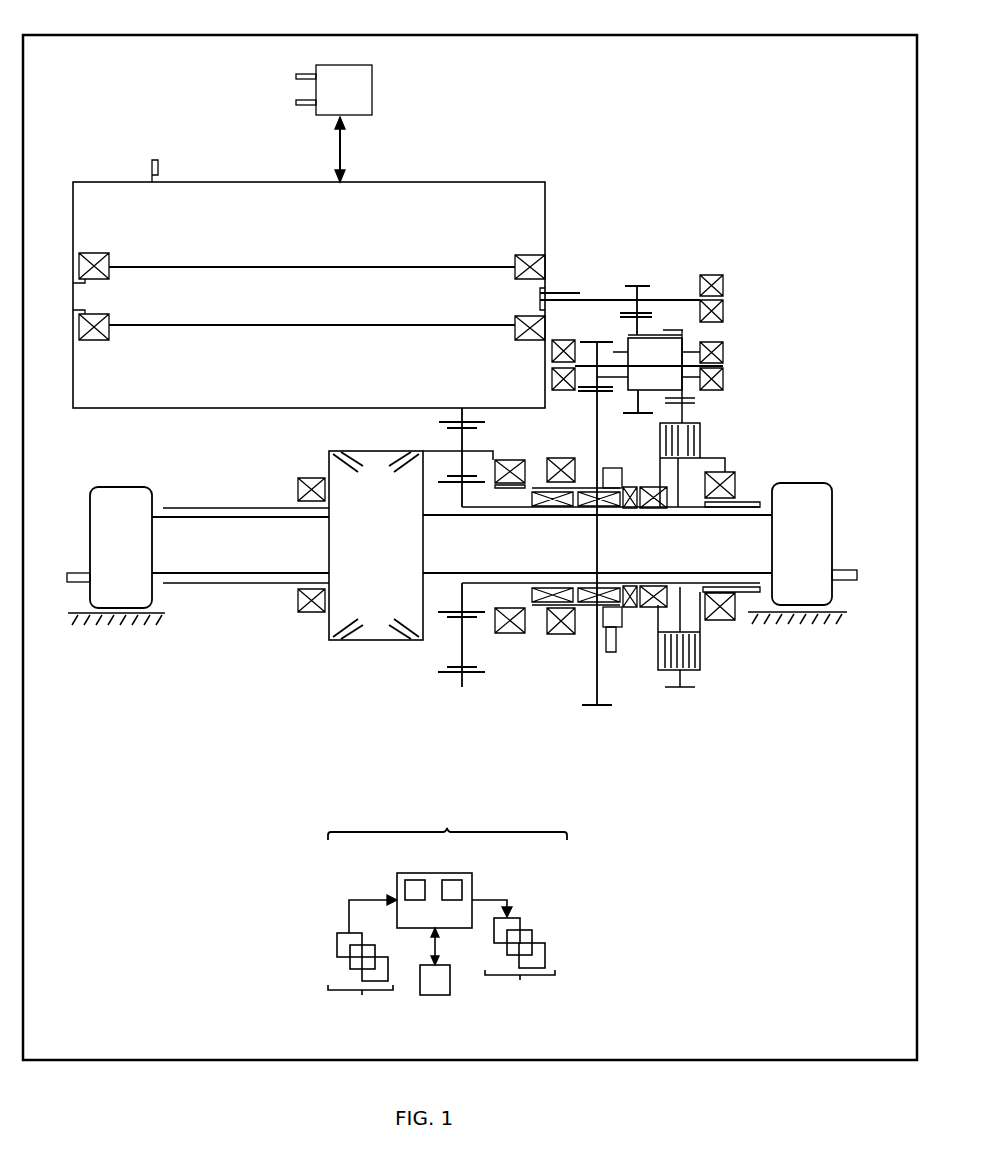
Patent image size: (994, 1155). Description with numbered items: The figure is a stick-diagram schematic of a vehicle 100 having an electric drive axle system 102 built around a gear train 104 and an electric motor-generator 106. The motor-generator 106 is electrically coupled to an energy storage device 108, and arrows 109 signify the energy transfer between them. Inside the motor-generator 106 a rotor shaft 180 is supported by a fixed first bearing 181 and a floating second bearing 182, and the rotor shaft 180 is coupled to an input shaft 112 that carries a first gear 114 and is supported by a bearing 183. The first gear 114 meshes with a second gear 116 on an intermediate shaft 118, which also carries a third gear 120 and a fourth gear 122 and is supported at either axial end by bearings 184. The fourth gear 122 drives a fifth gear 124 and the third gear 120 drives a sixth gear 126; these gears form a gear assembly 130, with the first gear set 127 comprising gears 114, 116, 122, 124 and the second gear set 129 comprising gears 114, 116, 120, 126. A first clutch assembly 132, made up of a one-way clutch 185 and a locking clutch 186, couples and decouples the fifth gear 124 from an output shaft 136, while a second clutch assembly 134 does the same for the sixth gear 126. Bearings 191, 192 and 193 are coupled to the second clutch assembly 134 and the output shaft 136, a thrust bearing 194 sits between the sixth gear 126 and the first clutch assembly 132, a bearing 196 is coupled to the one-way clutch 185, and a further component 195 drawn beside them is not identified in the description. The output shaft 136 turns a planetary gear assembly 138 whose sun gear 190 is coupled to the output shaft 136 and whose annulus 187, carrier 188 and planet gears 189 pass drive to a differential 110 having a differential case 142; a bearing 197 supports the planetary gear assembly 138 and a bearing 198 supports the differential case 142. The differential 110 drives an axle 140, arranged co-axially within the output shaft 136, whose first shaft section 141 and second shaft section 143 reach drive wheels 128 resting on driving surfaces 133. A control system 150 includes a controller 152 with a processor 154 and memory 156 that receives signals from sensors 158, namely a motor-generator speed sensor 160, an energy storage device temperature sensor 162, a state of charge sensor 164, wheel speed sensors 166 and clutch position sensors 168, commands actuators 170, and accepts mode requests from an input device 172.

The vehicle 100 is at (36, 35).
The electric drive axle system 102 is at (126, 80).
The gear train 104 is at (765, 193).
The electric motor-generator 106 is at (117, 181).
The energy storage device 108 is at (372, 94).
The arrows 109 is at (342, 152).
The differential 110 is at (319, 457).
The input shaft 112 is at (601, 293).
The first gear 114 is at (639, 297).
The second gear 116 is at (630, 325).
The intermediate shaft 118 is at (637, 367).
The third gear 120 is at (684, 343).
The fourth gear 122 is at (582, 348).
The fifth gear 124 is at (595, 693).
The sixth gear 126 is at (690, 682).
The first gear set 127 is at (595, 727).
The drive wheels 128 is at (90, 518).
The second gear set 129 is at (678, 727).
The gear assembly 130 is at (797, 317).
The first clutch assembly 132 is at (628, 462).
The driving surfaces 133 is at (75, 612).
The second clutch assembly 134 is at (710, 440).
The output shaft 136 is at (526, 588).
The planetary gear assembly 138 is at (393, 422).
The axle 140 is at (240, 505).
The first shaft section 141 is at (154, 503).
The differential case 142 is at (373, 640).
The second shaft section 143 is at (440, 573).
The control system 150 is at (447, 822).
The controller 152 is at (406, 873).
The processor 154 is at (405, 891).
The memory 156 is at (462, 891).
The sensors 158 is at (362, 960).
The motor-generator speed sensor 160 is at (157, 172).
The energy storage device temperature sensor 162 is at (302, 103).
The energy storage device state of charge sensor 164 is at (302, 77).
The wheel speed sensors 166 is at (80, 573).
The clutch position sensors 168 is at (715, 458).
The actuators 170 is at (513, 955).
The input device 172 is at (435, 995).
The rotor shaft 180 is at (232, 265).
The first bearing 181 is at (92, 252).
The second bearing 182 is at (524, 255).
The bearing 183 is at (713, 275).
The bearings 184 is at (725, 379).
The one-way clutch 185 is at (553, 588).
The locking clutch 186 is at (614, 616).
The annulus 187 is at (470, 422).
The carrier 188 is at (440, 451).
The planet gears 189 is at (470, 446).
The sun gear 190 is at (465, 502).
The bearing 191 is at (738, 622).
The bearing 192 is at (737, 482).
The bearing 193 is at (655, 586).
The bearing 194 is at (630, 586).
The bearing 195 is at (600, 588).
The bearing 196 is at (570, 635).
The bearing 197 is at (513, 635).
The bearing 198 is at (312, 614).